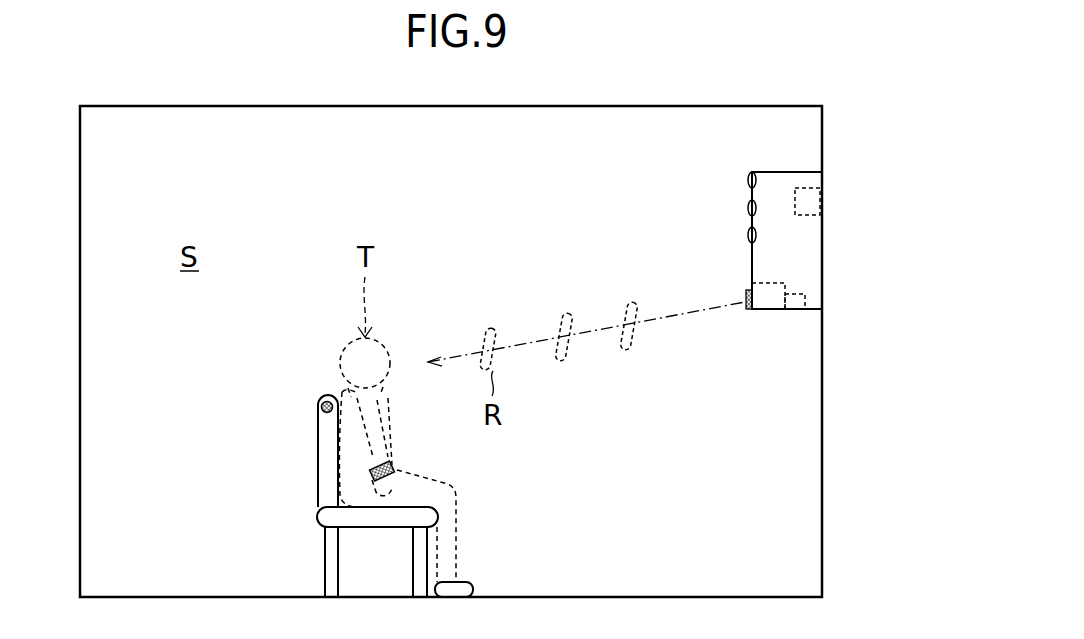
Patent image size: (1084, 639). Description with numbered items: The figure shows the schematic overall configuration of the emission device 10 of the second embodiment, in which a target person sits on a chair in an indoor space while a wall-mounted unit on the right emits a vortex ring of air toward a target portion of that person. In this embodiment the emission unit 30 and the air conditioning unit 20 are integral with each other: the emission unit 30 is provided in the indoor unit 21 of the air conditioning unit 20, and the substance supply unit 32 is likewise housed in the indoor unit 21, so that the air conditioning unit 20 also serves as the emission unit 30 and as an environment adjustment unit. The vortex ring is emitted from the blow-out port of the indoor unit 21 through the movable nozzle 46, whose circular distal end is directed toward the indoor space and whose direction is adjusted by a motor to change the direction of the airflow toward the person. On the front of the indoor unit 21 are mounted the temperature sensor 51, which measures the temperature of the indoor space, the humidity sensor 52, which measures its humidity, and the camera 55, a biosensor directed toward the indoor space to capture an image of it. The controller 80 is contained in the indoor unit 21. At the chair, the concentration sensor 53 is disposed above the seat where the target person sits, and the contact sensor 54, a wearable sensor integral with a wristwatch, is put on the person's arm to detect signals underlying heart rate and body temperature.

The emission device 10 is at (662, 173).
The air conditioning unit 20 is at (774, 211).
The indoor unit 21 is at (770, 171).
The emission unit 30 is at (767, 313).
The substance supply unit 32 is at (805, 297).
The movable nozzle 46 is at (749, 311).
The temperature sensor 51 is at (749, 180).
The humidity sensor 52 is at (749, 208).
The camera 55 is at (749, 235).
The controller 80 is at (821, 195).
The concentration sensor 53 is at (321, 407).
The contact sensor 54 is at (394, 469).